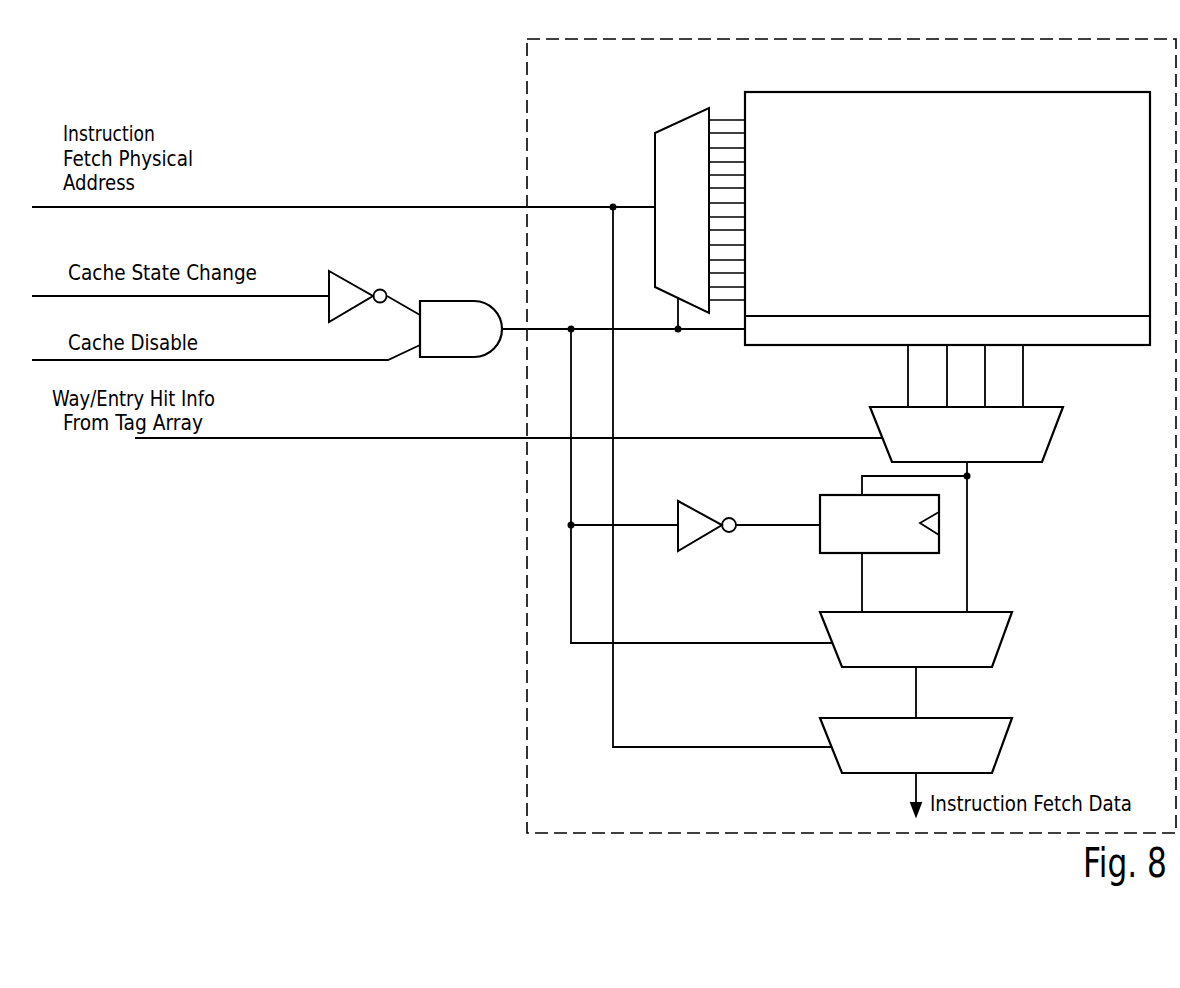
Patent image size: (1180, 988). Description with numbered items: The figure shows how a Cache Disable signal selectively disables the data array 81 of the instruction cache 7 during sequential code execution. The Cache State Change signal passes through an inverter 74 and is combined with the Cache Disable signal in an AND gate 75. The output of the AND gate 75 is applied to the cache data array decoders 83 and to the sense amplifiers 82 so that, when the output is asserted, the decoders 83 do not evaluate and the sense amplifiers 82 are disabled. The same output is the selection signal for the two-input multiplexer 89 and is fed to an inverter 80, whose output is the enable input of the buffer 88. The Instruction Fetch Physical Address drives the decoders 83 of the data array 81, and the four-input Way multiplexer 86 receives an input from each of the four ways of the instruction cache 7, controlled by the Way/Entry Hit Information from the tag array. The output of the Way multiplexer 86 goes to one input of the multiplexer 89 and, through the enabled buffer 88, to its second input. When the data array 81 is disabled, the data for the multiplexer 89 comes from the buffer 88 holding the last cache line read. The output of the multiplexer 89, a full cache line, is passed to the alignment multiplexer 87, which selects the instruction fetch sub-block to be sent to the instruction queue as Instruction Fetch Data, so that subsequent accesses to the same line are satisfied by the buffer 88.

The instruction cache 7 is at (1142, 69).
The inverter 74 is at (358, 286).
The AND gate 75 is at (452, 300).
The inverter 80 is at (710, 512).
The data array 81 is at (959, 265).
The sense amplifiers 82 is at (1091, 341).
The decoders 83 is at (668, 130).
The Way multiplexer 86 is at (1040, 453).
The alignment multiplexer 87 is at (1003, 753).
The buffer 88 is at (907, 543).
The multiplexer 89 is at (1007, 632).